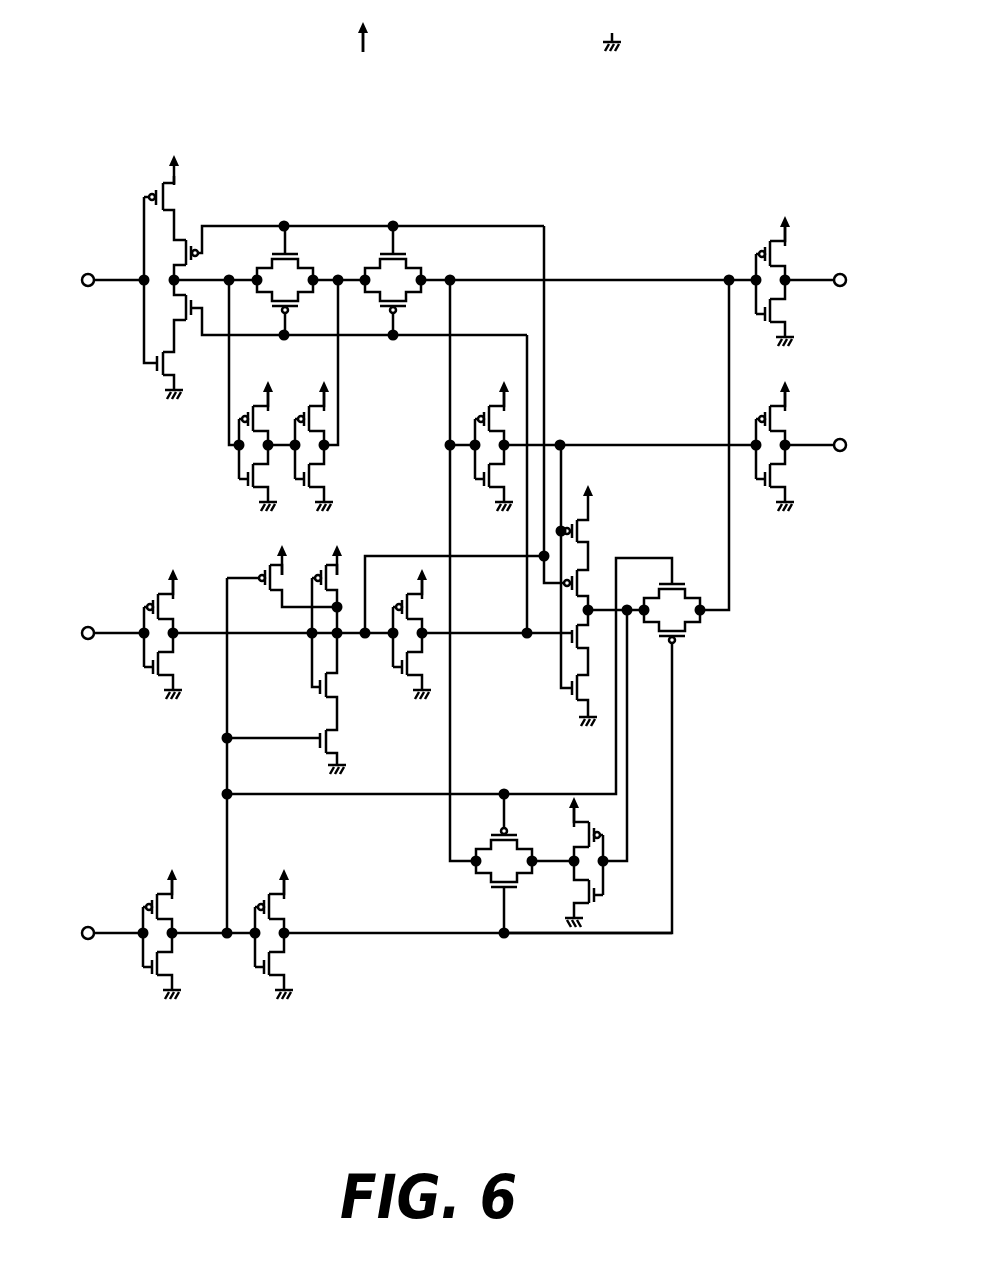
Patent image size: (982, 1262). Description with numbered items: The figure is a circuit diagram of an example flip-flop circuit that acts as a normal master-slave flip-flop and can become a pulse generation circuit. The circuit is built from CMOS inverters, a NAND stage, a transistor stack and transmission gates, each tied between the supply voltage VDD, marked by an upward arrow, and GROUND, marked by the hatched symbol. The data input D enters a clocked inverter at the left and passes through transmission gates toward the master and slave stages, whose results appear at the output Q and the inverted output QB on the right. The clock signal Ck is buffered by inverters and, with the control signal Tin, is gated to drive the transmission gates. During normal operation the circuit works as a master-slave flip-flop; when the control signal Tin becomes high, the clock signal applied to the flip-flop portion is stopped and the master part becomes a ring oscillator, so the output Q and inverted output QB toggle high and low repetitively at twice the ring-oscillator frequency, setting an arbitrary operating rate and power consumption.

The data input D is at (96, 277).
The clock signal input Ck is at (90, 626).
The control signal Tin is at (89, 928).
The output Q is at (835, 279).
The inverted output QB is at (845, 445).
The supply voltage VDD is at (440, 67).
The ground GROUND is at (682, 42).